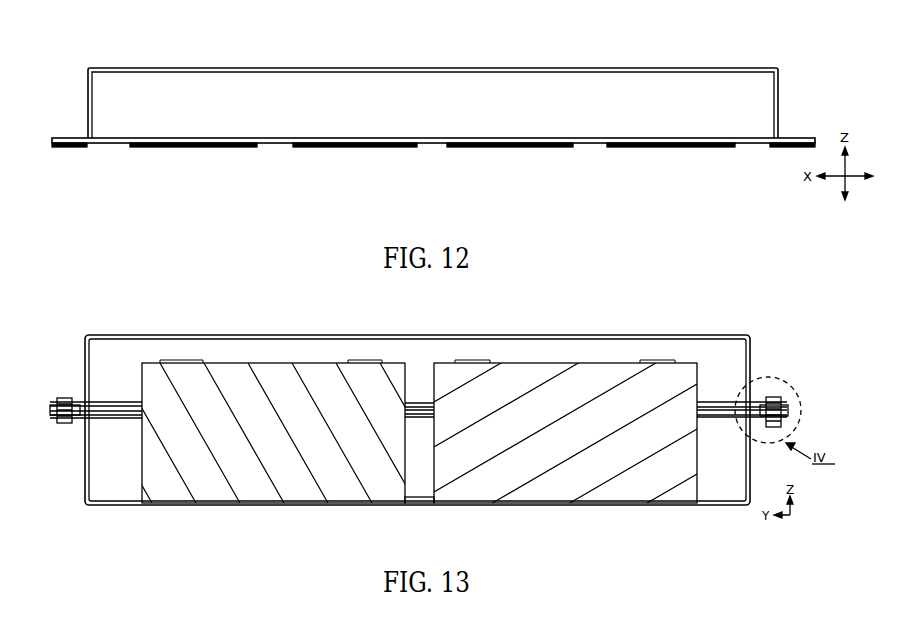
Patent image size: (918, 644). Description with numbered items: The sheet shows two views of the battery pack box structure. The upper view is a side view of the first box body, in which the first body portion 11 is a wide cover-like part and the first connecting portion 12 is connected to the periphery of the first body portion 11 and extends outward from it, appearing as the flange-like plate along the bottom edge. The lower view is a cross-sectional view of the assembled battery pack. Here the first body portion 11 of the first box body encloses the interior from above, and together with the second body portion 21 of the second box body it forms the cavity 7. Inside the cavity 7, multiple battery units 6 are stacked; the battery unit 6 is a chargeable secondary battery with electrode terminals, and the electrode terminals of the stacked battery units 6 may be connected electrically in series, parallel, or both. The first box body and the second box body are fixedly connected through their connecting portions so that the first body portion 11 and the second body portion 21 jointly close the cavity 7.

In FIG. 12, the first body portion 11 is at (743, 83).
In FIG. 13, the first body portion 11 is at (509, 338).
In FIG. 12, the first connecting portion 12 is at (68, 149).
In FIG. 13, the battery unit 6 is at (256, 499).
In FIG. 13, the second body portion 21 is at (490, 504).
In FIG. 13, the cavity 7 is at (118, 498).